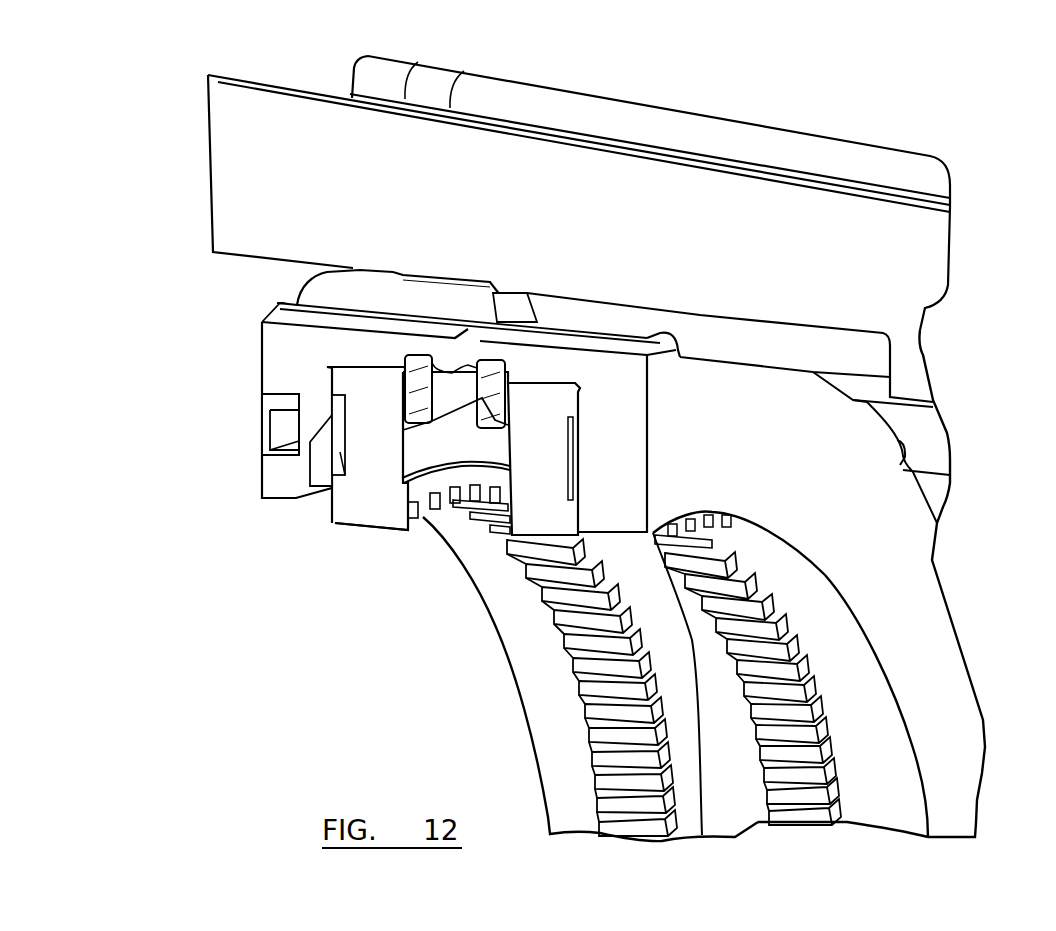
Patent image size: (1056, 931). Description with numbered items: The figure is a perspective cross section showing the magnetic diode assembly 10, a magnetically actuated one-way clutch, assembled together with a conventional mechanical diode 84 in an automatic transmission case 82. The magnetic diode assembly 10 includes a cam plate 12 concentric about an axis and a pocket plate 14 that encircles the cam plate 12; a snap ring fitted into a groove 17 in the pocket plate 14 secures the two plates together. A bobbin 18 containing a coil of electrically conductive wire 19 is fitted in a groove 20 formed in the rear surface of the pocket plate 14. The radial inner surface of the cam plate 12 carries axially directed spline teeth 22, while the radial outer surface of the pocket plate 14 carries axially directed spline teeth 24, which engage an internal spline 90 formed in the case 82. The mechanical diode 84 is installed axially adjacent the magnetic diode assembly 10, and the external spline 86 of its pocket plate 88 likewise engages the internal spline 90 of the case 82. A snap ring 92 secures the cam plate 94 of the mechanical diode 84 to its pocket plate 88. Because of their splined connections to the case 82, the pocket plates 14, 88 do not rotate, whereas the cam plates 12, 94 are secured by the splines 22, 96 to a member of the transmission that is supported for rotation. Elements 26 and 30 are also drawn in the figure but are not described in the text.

The magnetic diode assembly 10 is at (248, 513).
The cam plate 12 is at (380, 532).
The pocket plate 14 is at (305, 357).
The groove 17 is at (270, 310).
The bobbin 18 is at (273, 400).
The coil of electrically conductive wire 19 is at (287, 423).
The groove 20 is at (287, 462).
The spline teeth 22 is at (563, 652).
The spline teeth 24 is at (325, 293).
The plate 26 is at (345, 452).
The spring member 30 is at (328, 470).
The automatic transmission case 82 is at (710, 197).
The mechanical diode 84 is at (967, 550).
The external spline 86 is at (508, 307).
The pocket plate 88 is at (630, 464).
The internal spline 90 is at (880, 350).
The snap ring 92 is at (488, 420).
The cam plate 94 is at (556, 459).
The splines 96 is at (807, 787).